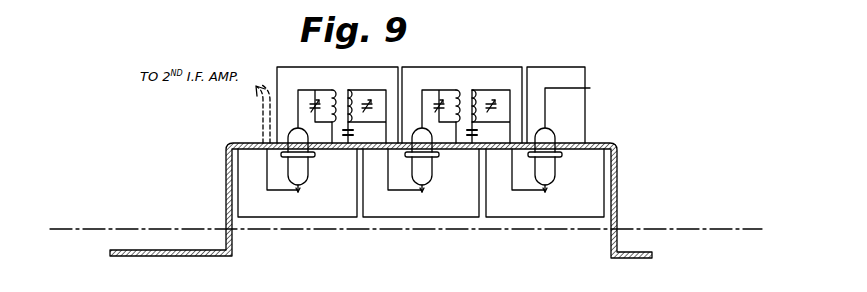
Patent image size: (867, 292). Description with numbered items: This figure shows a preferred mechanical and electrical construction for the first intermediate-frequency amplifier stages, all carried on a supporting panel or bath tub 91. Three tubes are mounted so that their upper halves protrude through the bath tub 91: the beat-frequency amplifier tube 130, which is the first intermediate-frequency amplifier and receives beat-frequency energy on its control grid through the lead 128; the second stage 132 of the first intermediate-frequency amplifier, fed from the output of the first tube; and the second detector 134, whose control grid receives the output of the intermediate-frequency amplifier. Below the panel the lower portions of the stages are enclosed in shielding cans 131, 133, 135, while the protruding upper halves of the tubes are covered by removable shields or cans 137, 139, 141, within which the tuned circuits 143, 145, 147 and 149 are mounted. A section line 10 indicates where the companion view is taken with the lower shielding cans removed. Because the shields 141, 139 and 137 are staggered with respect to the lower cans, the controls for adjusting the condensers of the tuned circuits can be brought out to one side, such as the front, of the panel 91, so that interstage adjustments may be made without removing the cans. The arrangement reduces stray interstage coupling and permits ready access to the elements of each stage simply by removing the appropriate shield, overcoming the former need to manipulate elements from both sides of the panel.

The bath tub 91 is at (617, 173).
The section line 10 is at (68, 232).
The removable shield 141 is at (341, 67).
The removable shield 139 is at (473, 67).
The removable shield 137 is at (585, 67).
The shielding can 135 is at (343, 218).
The shielding can 133 is at (435, 218).
The shielding can 131 is at (522, 219).
The second detector 134 is at (308, 172).
The second stage of the first intermediate-frequency amplifier 132 is at (432, 172).
The beat-frequency amplifier tube 130 is at (556, 172).
The tuned circuit 149 is at (325, 90).
The tuned circuit 147 is at (355, 88).
The tuned circuit 145 is at (448, 92).
The tuned circuit 143 is at (480, 90).
The lead 128 is at (546, 102).